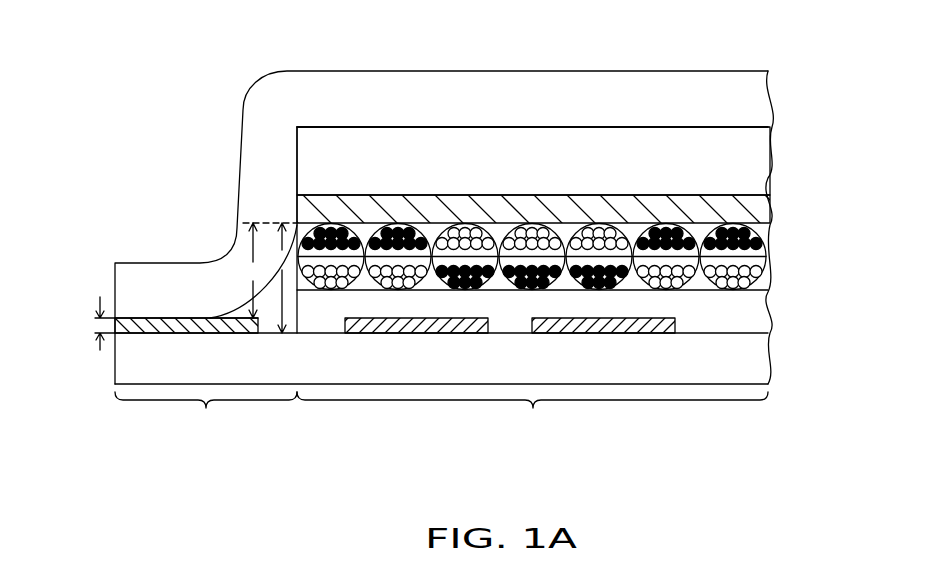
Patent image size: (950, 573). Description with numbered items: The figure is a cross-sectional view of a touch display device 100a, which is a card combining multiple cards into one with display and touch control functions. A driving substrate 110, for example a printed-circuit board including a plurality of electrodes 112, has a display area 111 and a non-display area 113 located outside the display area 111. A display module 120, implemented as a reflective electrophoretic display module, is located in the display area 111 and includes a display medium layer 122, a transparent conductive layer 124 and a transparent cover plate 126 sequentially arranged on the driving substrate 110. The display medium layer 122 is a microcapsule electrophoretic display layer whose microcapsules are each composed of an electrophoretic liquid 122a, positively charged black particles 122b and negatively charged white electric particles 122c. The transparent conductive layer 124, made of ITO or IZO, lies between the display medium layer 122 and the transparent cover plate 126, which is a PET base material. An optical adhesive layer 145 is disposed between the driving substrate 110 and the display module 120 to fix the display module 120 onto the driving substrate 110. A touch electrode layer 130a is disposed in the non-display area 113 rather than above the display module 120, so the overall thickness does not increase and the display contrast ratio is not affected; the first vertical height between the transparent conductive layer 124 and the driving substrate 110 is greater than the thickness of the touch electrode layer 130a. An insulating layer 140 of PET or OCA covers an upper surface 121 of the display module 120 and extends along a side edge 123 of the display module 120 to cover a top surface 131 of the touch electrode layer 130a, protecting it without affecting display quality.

The touch display device 100a is at (772, 427).
The driving substrate 110 is at (758, 360).
The display area 111 is at (532, 417).
The electrodes 112 is at (417, 333).
The non-display area 113 is at (206, 417).
The display module 120 is at (603, 217).
The upper surface 121 is at (552, 127).
The display medium layer 122 is at (590, 260).
The electrophoretic liquid 122a is at (757, 259).
The positively charged black particles 122b is at (766, 240).
The negatively charged white electric particles 122c is at (757, 273).
The side edge 123 is at (297, 193).
The transparent conductive layer 124 is at (765, 208).
The transparent cover plate 126 is at (757, 178).
The touch electrode layer 130a is at (188, 325).
The top surface 131 is at (143, 317).
The insulating layer 140 is at (762, 103).
The optical adhesive layer 145 is at (755, 317).